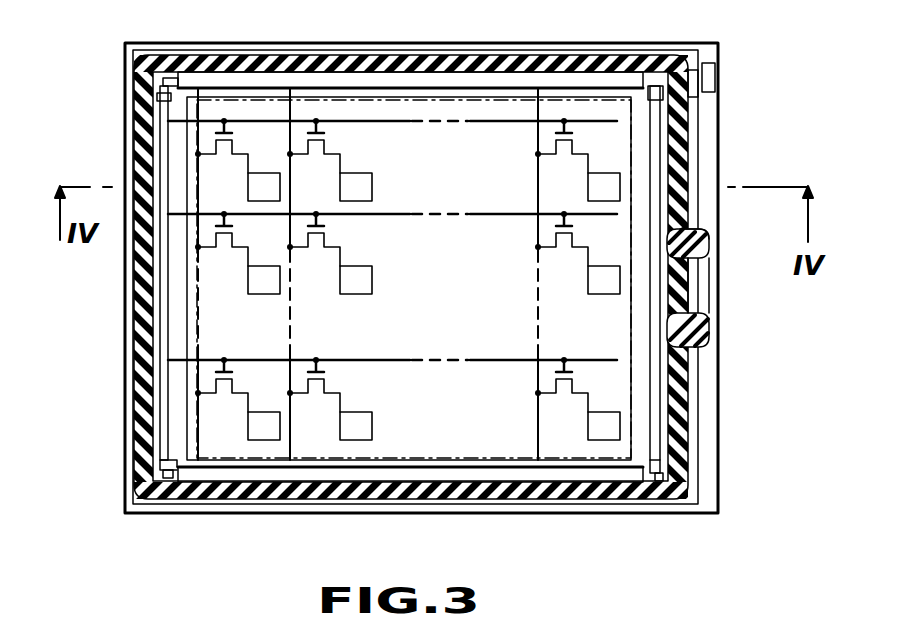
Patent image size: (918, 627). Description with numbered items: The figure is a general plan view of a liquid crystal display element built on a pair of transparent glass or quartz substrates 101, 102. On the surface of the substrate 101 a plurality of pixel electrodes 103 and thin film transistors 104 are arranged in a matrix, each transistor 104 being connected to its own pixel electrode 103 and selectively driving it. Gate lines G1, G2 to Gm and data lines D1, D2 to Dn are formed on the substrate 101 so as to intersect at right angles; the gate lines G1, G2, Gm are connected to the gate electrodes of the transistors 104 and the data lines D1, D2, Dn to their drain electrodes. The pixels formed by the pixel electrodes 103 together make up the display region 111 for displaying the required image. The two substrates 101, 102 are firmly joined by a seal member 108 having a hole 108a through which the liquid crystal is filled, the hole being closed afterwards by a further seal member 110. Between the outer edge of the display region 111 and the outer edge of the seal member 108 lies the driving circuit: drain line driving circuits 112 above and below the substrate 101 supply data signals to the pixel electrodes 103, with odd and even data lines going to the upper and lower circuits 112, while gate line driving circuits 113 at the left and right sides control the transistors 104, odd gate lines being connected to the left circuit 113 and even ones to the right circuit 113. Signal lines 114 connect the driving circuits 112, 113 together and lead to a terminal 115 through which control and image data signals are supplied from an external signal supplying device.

The transparent substrate 101 is at (708, 45).
The transparent substrate 102 is at (700, 372).
The pixel electrode 103 is at (248, 191).
The thin film transistor 104 is at (233, 133).
The seal member 108 is at (688, 118).
The hole 108a is at (700, 278).
The seal member 110 is at (708, 238).
The display region 111 is at (521, 460).
The drain line driving circuit 112 is at (457, 82).
The gate line driving circuit 113 is at (160, 422).
The signal line 114 is at (165, 82).
The terminal 115 is at (712, 78).
The data line D1 is at (200, 112).
The data line D2 is at (292, 118).
The data line Dn is at (538, 112).
The gate line G1 is at (178, 121).
The gate line G2 is at (222, 213).
The gate line Gm is at (182, 358).